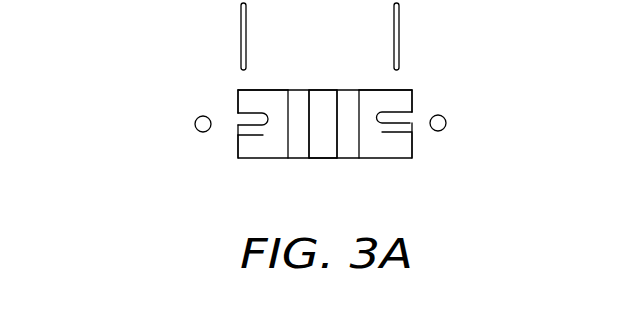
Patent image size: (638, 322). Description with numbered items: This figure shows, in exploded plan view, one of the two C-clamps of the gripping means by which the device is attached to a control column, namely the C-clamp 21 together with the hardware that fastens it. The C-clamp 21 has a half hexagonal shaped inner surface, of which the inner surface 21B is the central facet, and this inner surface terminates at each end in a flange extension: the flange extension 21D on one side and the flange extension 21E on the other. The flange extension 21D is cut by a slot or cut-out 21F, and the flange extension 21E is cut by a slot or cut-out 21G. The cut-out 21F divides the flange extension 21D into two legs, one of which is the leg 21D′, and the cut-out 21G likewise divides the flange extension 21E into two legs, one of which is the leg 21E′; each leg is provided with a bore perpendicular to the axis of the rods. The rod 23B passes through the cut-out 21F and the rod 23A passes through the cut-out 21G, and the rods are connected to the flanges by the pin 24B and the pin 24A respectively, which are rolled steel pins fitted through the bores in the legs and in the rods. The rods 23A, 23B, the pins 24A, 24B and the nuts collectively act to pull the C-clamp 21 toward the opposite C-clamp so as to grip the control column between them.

The C-clamp 21 is at (322, 158).
The inner surface 21B is at (324, 112).
The flange extension 21D is at (258, 90).
The leg 21D′ is at (237, 100).
The flange extension 21E is at (392, 88).
The leg 21E′ is at (413, 98).
The slot or cut-out 21F is at (238, 125).
The slot or cut-out 21G is at (412, 132).
The rod 23A is at (447, 122).
The rod 23B is at (194, 124).
The pin 24A is at (401, 14).
The pin 24B is at (248, 15).